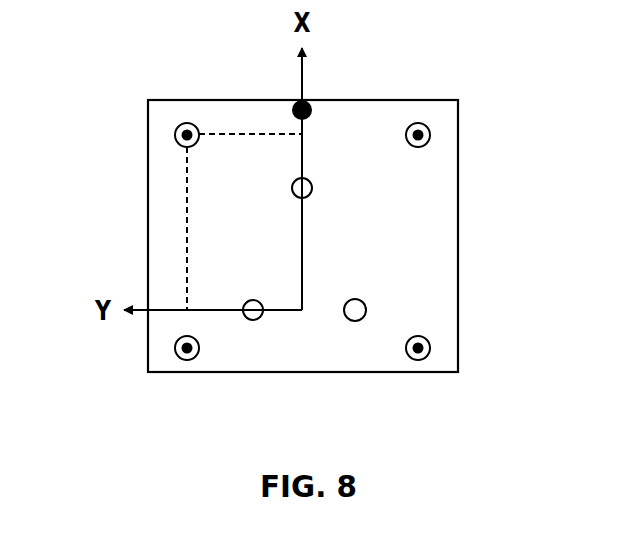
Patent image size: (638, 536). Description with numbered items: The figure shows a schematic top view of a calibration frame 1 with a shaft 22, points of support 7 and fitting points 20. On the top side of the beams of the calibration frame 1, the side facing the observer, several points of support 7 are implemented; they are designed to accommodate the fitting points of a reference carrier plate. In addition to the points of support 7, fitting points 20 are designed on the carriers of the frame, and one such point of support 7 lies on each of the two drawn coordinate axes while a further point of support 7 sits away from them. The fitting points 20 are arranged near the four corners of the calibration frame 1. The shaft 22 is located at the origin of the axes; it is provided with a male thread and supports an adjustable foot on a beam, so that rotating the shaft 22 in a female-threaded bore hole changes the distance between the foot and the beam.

The calibration frame 1 is at (128, 209).
The points of support 7 is at (312, 187).
The fitting points 20 is at (182, 127).
The shaft 22 is at (313, 103).